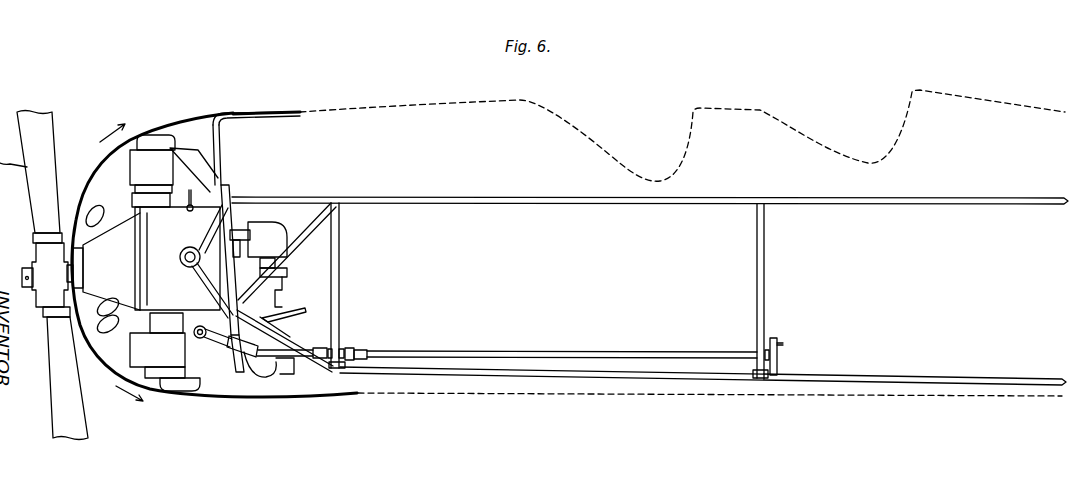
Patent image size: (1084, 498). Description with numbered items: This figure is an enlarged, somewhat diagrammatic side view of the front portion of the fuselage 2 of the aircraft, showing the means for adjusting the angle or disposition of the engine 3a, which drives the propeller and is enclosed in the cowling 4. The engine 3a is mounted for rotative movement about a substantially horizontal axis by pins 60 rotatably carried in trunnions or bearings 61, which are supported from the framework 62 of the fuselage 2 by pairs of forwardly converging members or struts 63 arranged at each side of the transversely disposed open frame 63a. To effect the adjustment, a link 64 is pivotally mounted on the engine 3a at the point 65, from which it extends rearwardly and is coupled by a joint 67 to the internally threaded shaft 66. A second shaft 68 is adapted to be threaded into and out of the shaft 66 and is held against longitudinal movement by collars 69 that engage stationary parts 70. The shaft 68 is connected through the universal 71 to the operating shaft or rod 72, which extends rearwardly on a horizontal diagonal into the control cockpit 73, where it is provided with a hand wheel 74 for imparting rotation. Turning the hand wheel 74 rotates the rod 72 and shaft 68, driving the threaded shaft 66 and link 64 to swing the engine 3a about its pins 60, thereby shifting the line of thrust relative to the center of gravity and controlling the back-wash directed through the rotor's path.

The fuselage 2 is at (300, 113).
The cowling 4 is at (178, 119).
The engine 3a is at (186, 263).
The pins 60 is at (180, 260).
The trunnions or bearings 61 is at (184, 270).
The framework 62 is at (321, 197).
The forwardly converging members or struts 63 is at (202, 231).
The transversely disposed open frame 63a is at (230, 283).
The link 64 is at (236, 372).
The pivot on the engine 65 is at (212, 336).
The internally threaded shaft 66 is at (283, 372).
The joint 67 is at (267, 372).
The shaft 68 is at (322, 348).
The collars 69 is at (343, 350).
The stationary parts 70 is at (342, 362).
The universal 71 is at (367, 352).
The operating shaft or rod 72 is at (612, 334).
The control cockpit 73 is at (698, 294).
The hand wheel 74 is at (776, 338).